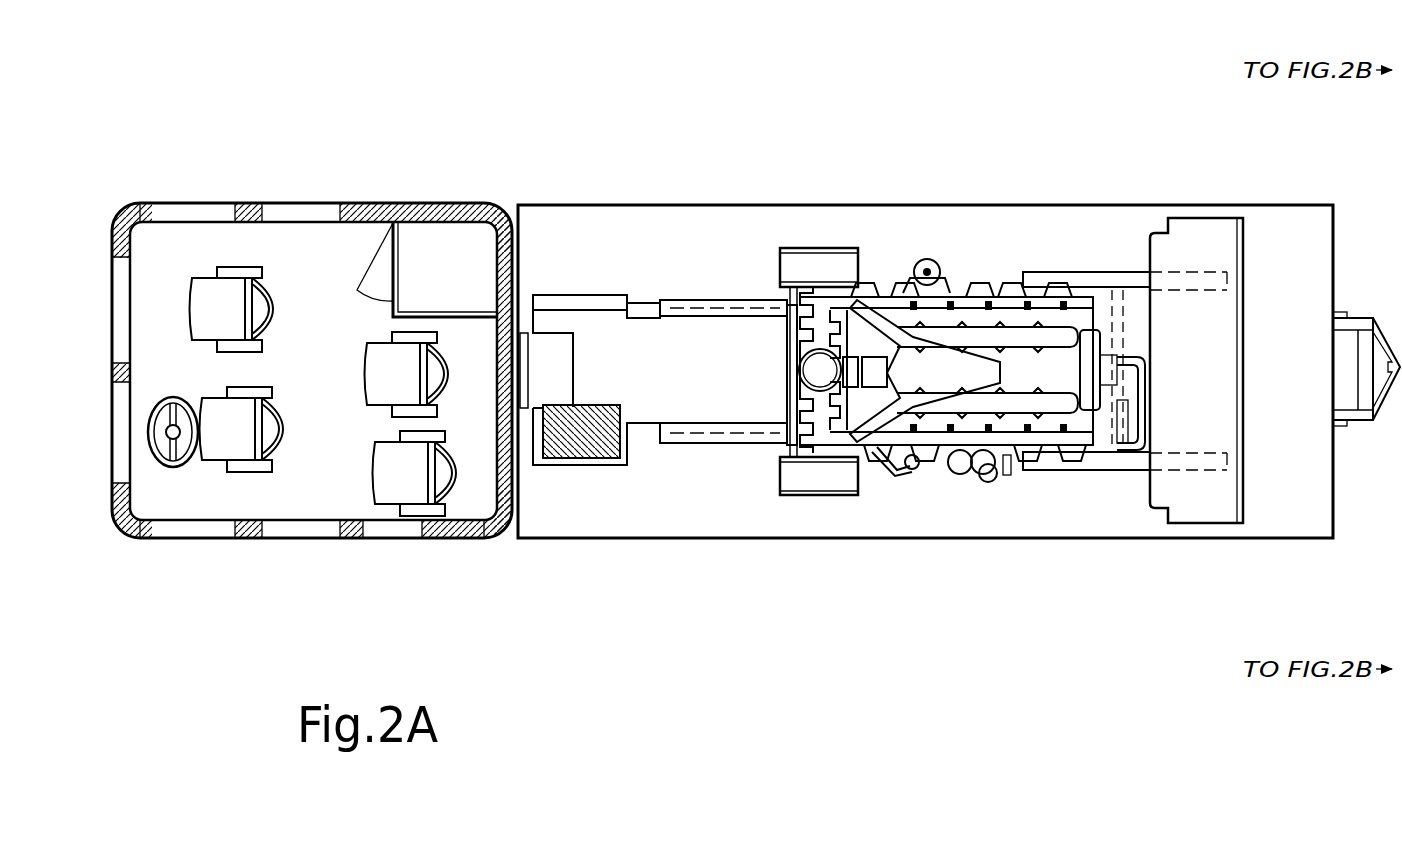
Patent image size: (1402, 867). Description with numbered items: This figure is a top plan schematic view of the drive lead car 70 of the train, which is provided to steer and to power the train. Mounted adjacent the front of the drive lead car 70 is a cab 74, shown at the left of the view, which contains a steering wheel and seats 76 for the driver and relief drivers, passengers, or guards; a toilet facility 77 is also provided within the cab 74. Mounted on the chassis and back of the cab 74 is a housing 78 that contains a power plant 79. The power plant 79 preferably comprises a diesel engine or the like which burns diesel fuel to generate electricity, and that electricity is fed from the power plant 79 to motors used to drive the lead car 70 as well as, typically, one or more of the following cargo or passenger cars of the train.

The drive lead car 70 is at (712, 545).
The cab 74 is at (352, 545).
The seats 76 is at (363, 447).
The toilet facility 77 is at (363, 272).
The housing 78 is at (1157, 540).
The power plant 79 is at (975, 242).